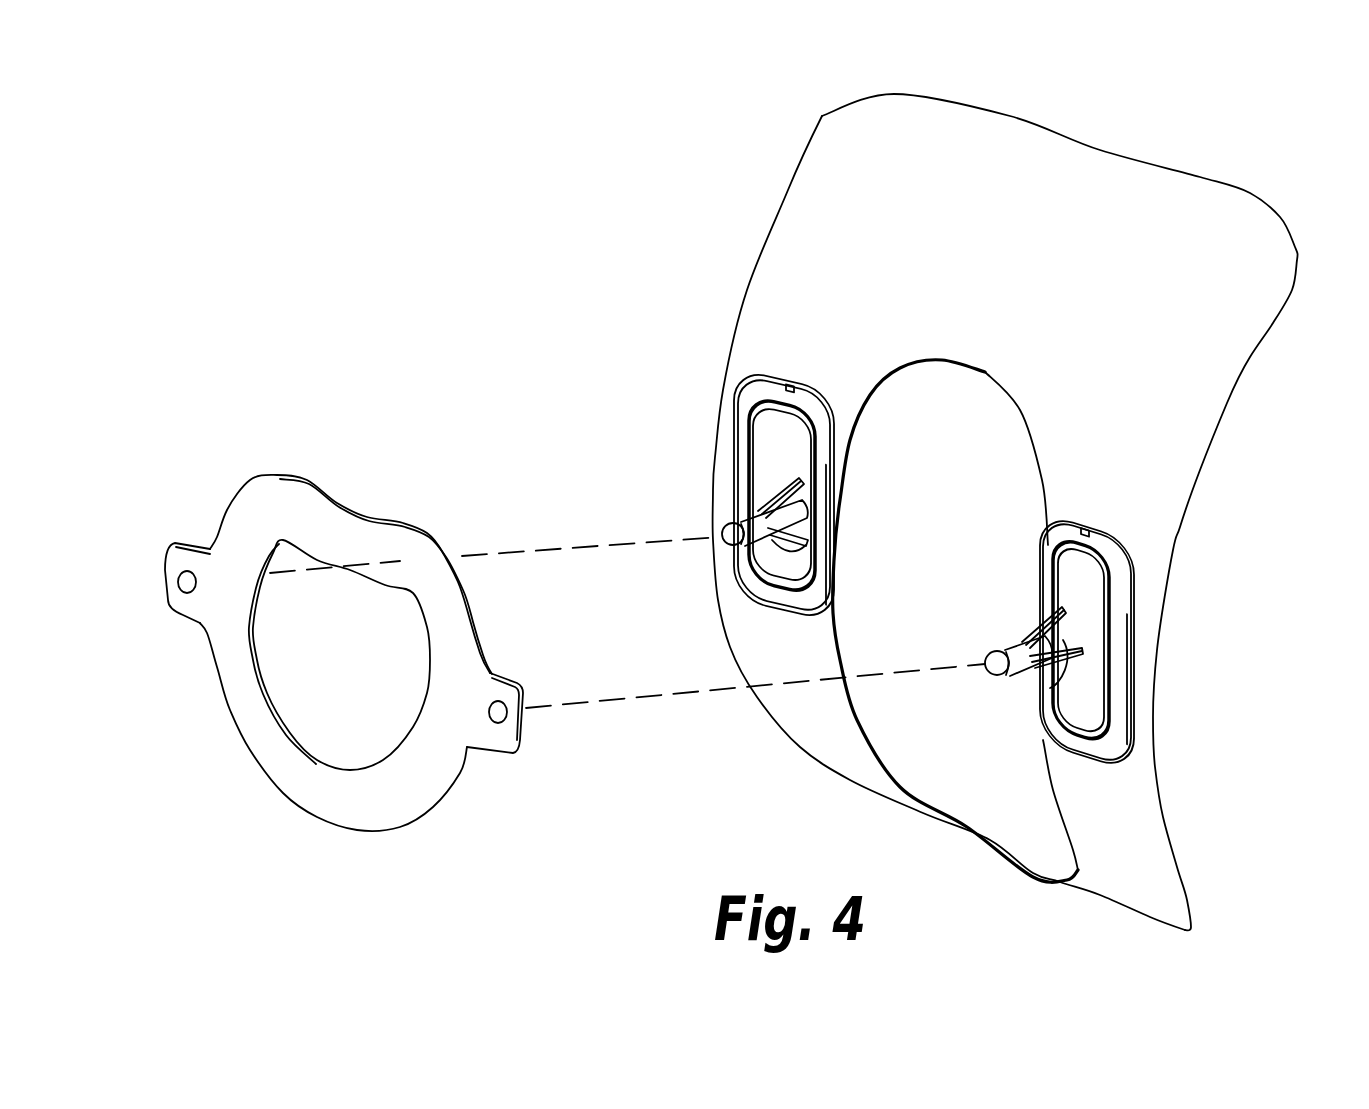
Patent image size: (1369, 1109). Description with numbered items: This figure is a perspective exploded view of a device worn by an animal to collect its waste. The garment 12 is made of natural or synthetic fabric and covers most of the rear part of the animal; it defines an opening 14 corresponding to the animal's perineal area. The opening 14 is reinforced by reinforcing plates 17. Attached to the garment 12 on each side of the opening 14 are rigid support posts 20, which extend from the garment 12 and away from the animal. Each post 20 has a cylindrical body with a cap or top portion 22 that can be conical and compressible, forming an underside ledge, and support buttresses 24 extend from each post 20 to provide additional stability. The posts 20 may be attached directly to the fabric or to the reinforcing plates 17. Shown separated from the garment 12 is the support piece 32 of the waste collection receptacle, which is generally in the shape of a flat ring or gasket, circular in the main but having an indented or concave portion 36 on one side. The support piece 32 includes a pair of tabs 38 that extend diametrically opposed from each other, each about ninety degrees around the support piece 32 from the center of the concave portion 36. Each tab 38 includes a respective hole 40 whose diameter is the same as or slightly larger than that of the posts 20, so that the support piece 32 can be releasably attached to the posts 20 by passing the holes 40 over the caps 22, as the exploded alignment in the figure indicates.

The garment 12 is at (1184, 323).
The opening 14 is at (913, 707).
The reinforcing plates 17 is at (772, 447).
The support posts 20 is at (800, 538).
The cap or top portion 22 is at (723, 547).
The support buttresses 24 is at (800, 493).
The support piece 32 is at (289, 794).
The concave portion 36 is at (350, 511).
The tabs 38 is at (177, 555).
The hole 40 is at (181, 589).